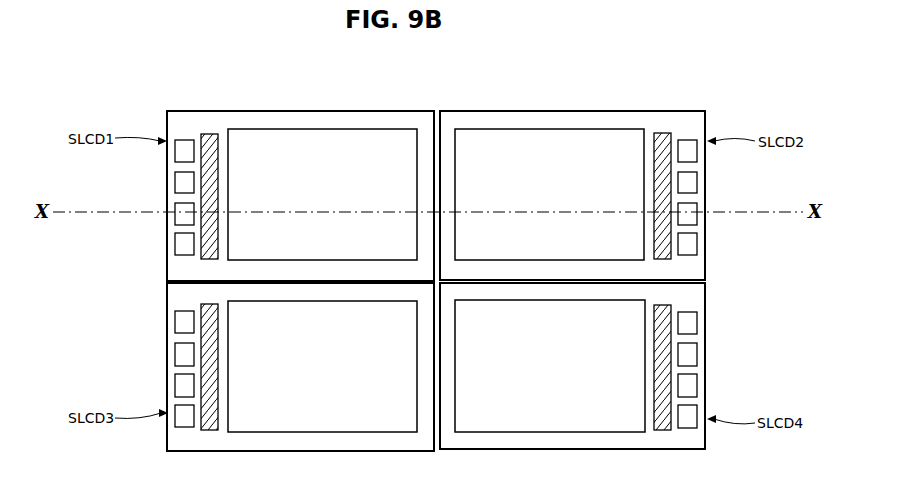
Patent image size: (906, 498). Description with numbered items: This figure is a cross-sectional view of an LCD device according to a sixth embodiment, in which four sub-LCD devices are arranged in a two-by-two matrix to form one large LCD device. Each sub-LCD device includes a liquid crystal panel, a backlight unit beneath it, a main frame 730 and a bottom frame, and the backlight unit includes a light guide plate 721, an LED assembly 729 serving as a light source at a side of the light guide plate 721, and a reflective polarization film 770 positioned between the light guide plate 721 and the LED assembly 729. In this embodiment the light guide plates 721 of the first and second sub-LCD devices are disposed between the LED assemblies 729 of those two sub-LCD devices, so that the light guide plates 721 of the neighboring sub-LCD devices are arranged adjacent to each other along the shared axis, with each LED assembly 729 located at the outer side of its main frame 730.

The light guide plate 721 is at (278, 129).
The main frame 730 is at (321, 112).
The reflective polarization film 770 is at (203, 260).
The LED assembly 729 is at (166, 178).